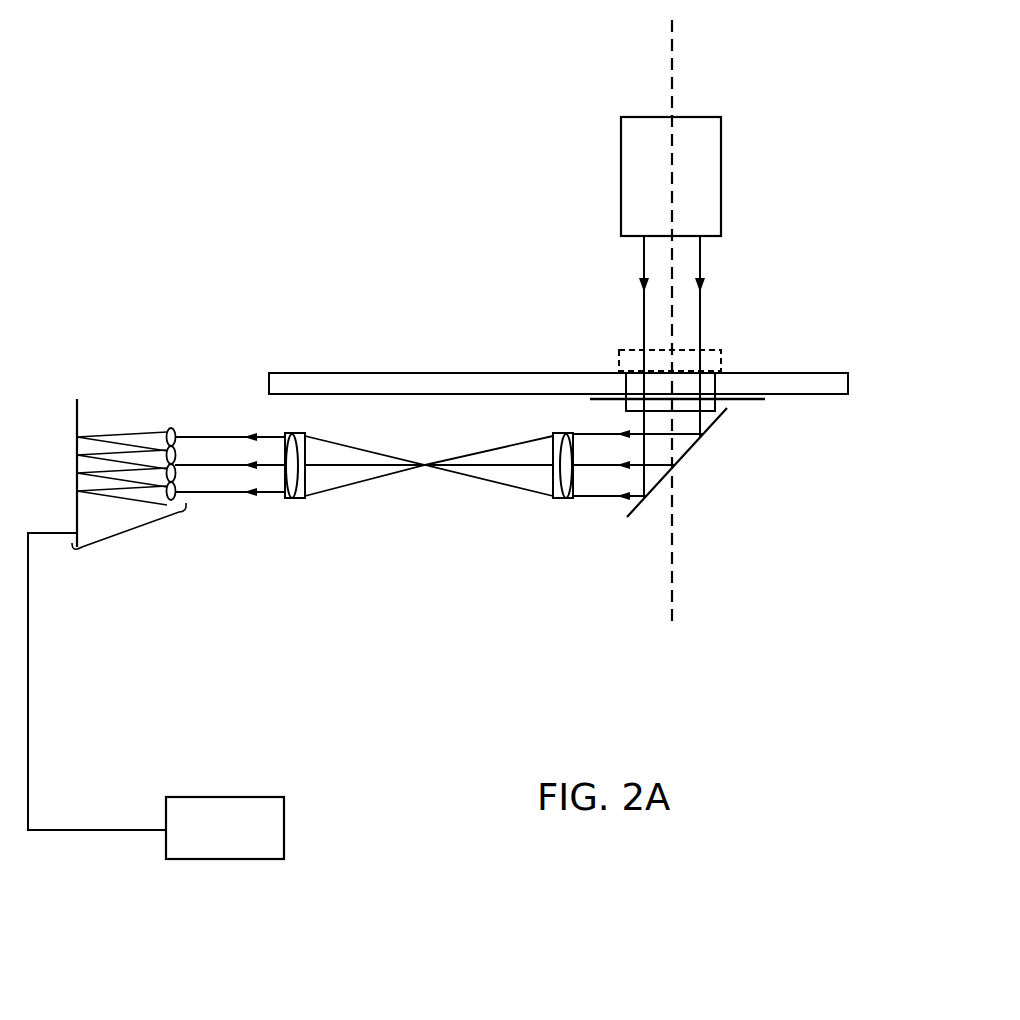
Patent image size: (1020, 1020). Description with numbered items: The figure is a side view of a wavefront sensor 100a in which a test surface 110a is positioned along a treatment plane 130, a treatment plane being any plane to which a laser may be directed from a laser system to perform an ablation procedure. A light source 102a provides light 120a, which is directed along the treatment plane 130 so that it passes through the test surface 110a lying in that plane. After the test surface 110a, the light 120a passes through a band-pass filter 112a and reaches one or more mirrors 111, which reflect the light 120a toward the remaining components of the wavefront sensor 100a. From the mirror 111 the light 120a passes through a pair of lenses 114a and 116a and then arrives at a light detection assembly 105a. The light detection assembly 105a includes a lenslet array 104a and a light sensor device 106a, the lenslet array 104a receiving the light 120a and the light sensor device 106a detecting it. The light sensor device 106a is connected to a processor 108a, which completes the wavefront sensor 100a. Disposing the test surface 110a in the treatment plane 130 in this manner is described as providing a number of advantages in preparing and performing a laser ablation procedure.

The wavefront sensor 100a is at (378, 258).
The treatment plane 130 is at (682, 58).
The light source 102a is at (711, 152).
The light 120a is at (655, 321).
The test surface 110a is at (735, 355).
The band-pass filter 112a is at (728, 407).
The mirror 111 is at (697, 462).
The lens 114a is at (565, 515).
The lens 116a is at (290, 515).
The lenslet array 104a is at (171, 418).
The light detection assembly 105a is at (132, 538).
The light sensor device 106a is at (77, 566).
The processor 108a is at (210, 812).